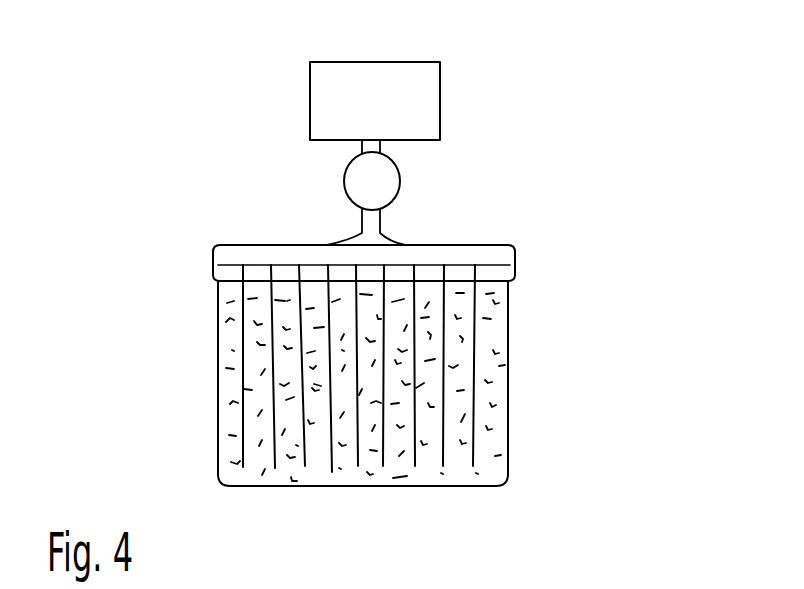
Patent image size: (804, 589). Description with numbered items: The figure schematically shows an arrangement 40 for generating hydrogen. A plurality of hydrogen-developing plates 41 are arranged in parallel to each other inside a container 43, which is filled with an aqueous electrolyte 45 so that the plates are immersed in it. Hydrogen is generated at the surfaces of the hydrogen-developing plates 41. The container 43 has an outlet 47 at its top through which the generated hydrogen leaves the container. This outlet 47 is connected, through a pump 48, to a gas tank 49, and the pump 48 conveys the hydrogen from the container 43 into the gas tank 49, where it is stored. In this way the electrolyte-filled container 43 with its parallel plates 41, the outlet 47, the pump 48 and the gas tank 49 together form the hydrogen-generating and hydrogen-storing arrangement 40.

The arrangement 40 is at (606, 100).
The hydrogen-developing plates 41 is at (475, 378).
The container 43 is at (508, 420).
The aqueous electrolyte 45 is at (496, 348).
The outlet 47 is at (388, 233).
The pump 48 is at (401, 178).
The gas tank 49 is at (440, 100).